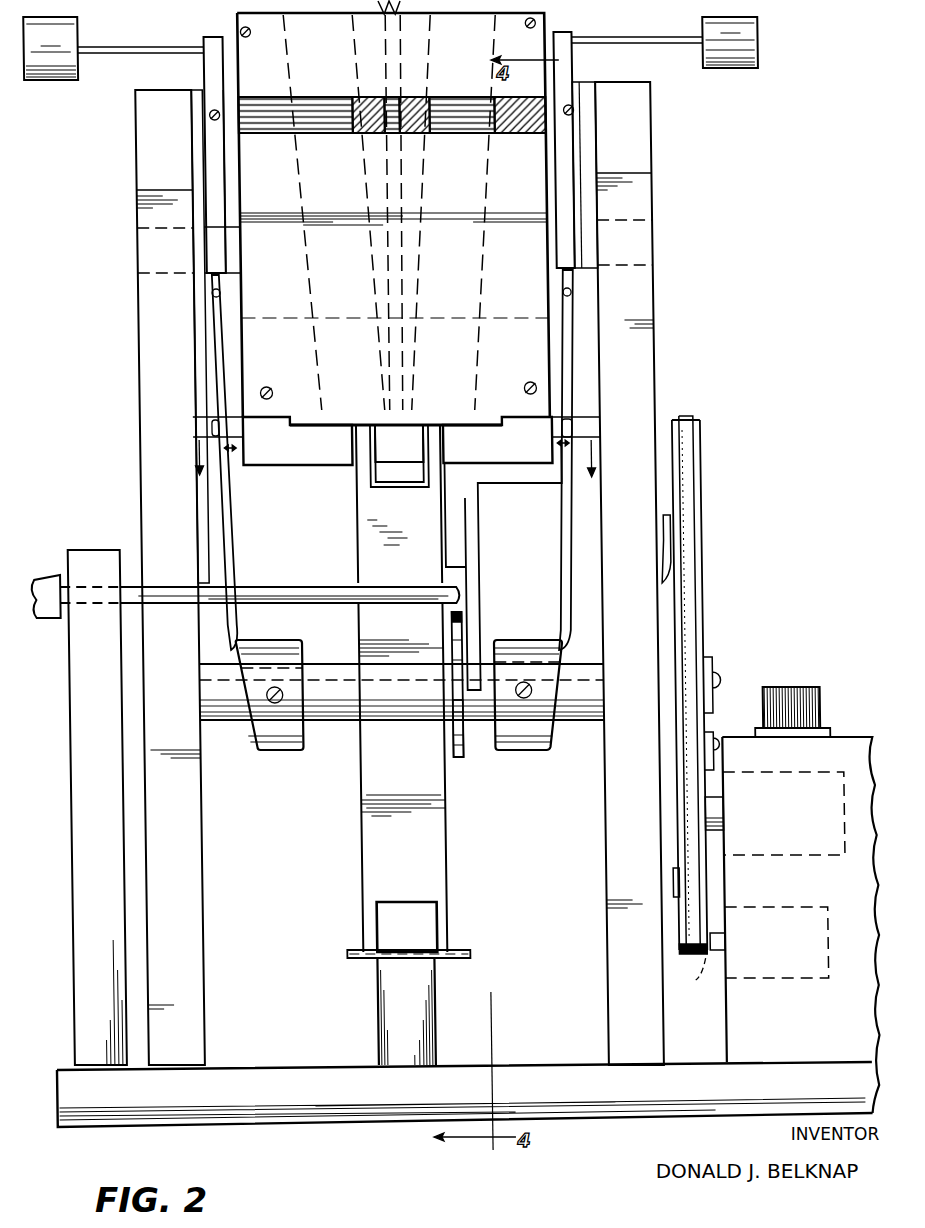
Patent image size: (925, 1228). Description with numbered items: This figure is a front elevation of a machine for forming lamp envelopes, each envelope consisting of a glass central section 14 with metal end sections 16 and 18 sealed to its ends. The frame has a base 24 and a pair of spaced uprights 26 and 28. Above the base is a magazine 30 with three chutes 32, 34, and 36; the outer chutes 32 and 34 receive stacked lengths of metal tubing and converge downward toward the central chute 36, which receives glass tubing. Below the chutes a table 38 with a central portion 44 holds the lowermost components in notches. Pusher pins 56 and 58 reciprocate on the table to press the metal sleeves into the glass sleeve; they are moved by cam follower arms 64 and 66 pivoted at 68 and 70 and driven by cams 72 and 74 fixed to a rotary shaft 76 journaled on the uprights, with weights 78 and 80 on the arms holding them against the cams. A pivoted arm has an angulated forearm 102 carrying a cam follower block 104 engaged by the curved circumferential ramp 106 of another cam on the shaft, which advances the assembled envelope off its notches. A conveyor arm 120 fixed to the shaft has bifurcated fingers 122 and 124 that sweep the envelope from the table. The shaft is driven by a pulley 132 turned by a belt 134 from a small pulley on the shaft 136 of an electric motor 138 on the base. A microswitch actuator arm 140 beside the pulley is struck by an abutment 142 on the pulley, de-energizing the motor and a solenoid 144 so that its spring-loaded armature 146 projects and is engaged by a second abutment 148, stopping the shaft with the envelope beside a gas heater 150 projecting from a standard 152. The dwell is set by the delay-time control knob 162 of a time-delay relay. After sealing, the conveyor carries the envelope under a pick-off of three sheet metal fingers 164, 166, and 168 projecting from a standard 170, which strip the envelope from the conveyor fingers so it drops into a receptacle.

The central section 14 is at (390, 102).
The end section 16 is at (310, 108).
The end section 18 is at (468, 108).
The base 24 is at (326, 1110).
The upright 26 is at (134, 333).
The upright 28 is at (652, 297).
The magazine 30 is at (236, 14).
The chute 32 is at (230, 63).
The chute 34 is at (500, 44).
The chute 36 is at (395, 178).
The table 38 is at (321, 452).
The central portion 44 is at (400, 452).
The pusher pin 56 is at (222, 428).
The pusher pin 58 is at (560, 417).
The cam follower arm 64 is at (220, 517).
The cam follower arm 66 is at (567, 526).
The pivot 68 is at (208, 116).
The pivot 70 is at (573, 110).
The cam 72 is at (283, 752).
The cam 74 is at (535, 745).
The rotary shaft 76 is at (204, 728).
The weight 78 is at (50, 82).
The weight 80 is at (738, 70).
The forearm 102 is at (465, 590).
The cam follower block 104 is at (452, 650).
The circumferential ramp 106 is at (456, 737).
The conveyor arm 120 is at (435, 840).
The finger 122 is at (357, 479).
The finger 124 is at (425, 478).
The pulley 132 is at (694, 521).
The belt 134 is at (688, 587).
The motor shaft 136 is at (692, 823).
The electric motor 138 is at (792, 790).
The actuator arm 140 is at (662, 530).
The abutment 142 is at (661, 886).
The solenoid 144 is at (740, 958).
The armature 146 is at (685, 982).
The abutment 148 is at (695, 752).
The heater 150 is at (277, 594).
The standard 152 is at (78, 690).
The delay-time control knob 162 is at (788, 700).
The pick-off finger 164 is at (342, 962).
The pick-off finger 166 is at (403, 960).
The pick-off finger 168 is at (458, 952).
The standard 170 is at (400, 1032).